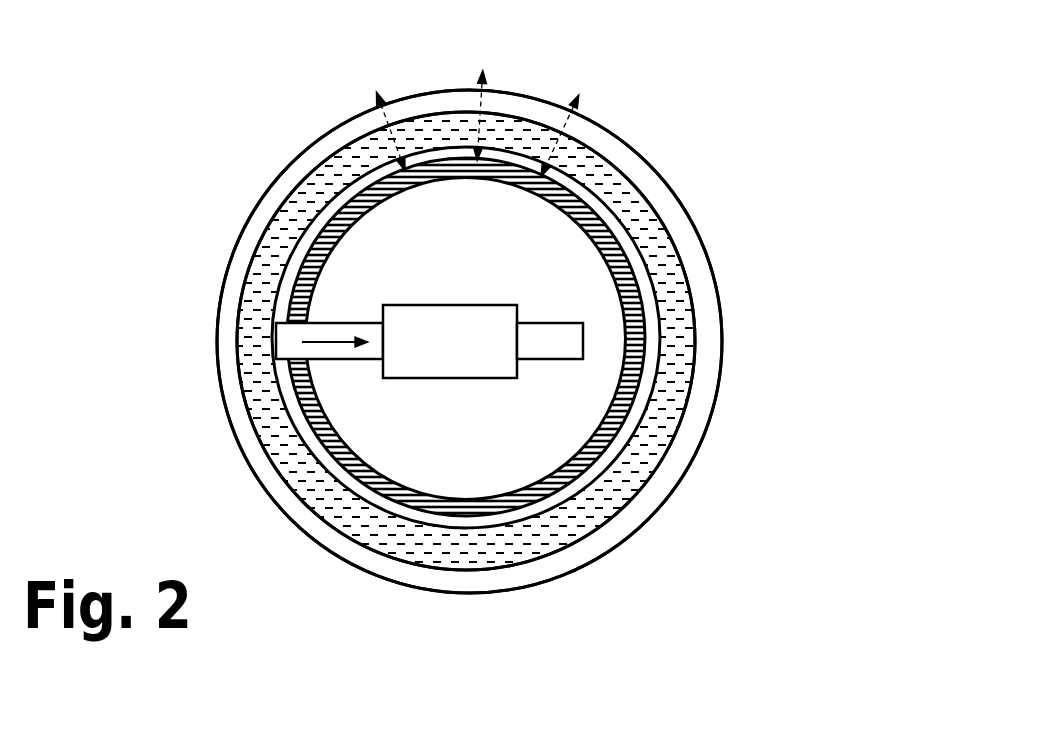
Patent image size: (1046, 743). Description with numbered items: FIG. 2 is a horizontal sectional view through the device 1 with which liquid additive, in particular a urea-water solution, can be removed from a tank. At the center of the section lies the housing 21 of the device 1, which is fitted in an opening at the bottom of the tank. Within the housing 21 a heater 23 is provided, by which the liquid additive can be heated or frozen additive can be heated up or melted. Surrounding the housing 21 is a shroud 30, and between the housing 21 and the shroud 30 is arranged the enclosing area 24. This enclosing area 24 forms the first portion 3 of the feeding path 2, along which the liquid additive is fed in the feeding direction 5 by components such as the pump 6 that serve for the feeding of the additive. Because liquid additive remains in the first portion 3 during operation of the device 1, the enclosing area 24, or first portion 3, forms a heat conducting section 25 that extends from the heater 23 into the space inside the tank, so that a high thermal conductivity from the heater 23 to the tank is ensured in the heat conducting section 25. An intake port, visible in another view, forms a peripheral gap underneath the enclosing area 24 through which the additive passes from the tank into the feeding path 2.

The device 1 is at (250, 147).
The feeding path 2 is at (552, 323).
The first portion 3 is at (683, 265).
The feeding direction 5 is at (337, 323).
The pump 6 is at (425, 305).
The housing 21 is at (580, 186).
The heater 23 is at (347, 451).
The enclosing area 24 is at (638, 198).
The heat conducting section 25 is at (577, 95).
The shroud 30 is at (240, 236).